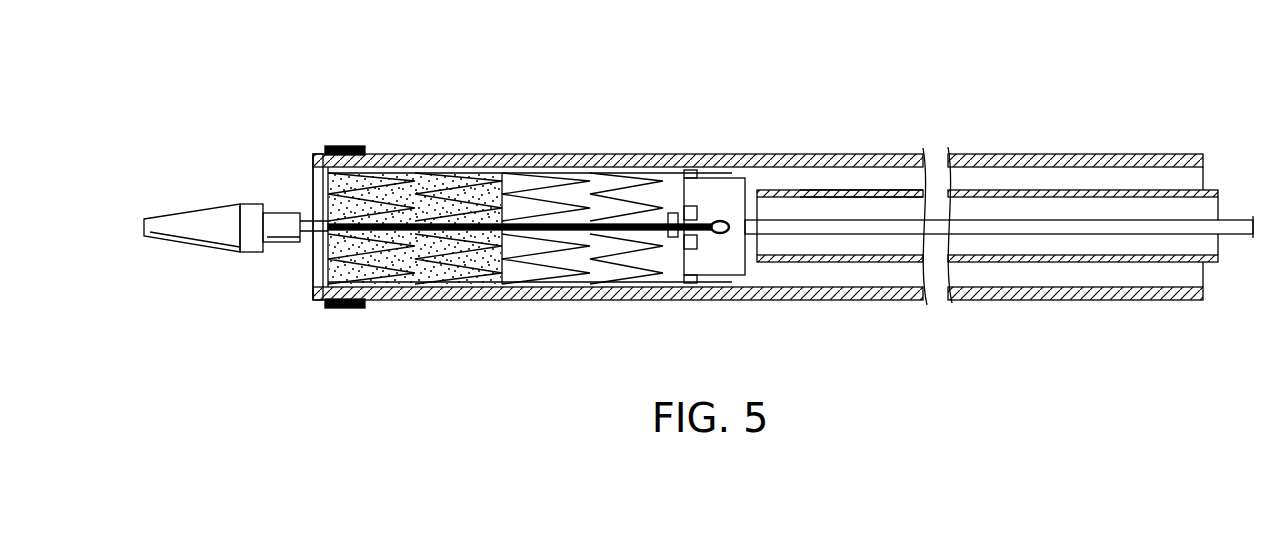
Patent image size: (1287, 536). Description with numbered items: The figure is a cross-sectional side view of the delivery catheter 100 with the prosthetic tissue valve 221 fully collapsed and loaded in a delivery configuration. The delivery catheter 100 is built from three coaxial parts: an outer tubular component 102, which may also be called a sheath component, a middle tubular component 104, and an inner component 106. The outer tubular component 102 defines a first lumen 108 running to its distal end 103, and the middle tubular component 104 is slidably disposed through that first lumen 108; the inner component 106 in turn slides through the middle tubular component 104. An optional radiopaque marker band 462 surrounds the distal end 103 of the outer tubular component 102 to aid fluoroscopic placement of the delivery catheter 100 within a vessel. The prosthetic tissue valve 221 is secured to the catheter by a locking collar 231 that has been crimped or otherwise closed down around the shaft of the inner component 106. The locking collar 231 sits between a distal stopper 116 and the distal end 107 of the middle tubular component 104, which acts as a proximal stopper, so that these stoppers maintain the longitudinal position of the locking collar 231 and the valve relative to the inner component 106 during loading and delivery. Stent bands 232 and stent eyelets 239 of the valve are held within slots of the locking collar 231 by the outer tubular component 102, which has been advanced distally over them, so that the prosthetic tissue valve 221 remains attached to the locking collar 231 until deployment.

The delivery catheter 100 is at (603, 78).
The outer tubular component 102 is at (992, 154).
The distal end of outer tubular component 103 is at (316, 146).
The middle tubular component 104 is at (1045, 190).
The inner component 106 is at (1134, 214).
The distal end of middle tubular component 107 is at (760, 190).
The first lumen 108 is at (858, 185).
The distal stopper 116 is at (672, 238).
The prosthetic tissue valve 221 is at (514, 277).
The locking collar 231 is at (748, 268).
The stent bands 232 is at (628, 221).
The stent eyelets 239 is at (721, 222).
The radiopaque marker band 462 is at (351, 146).